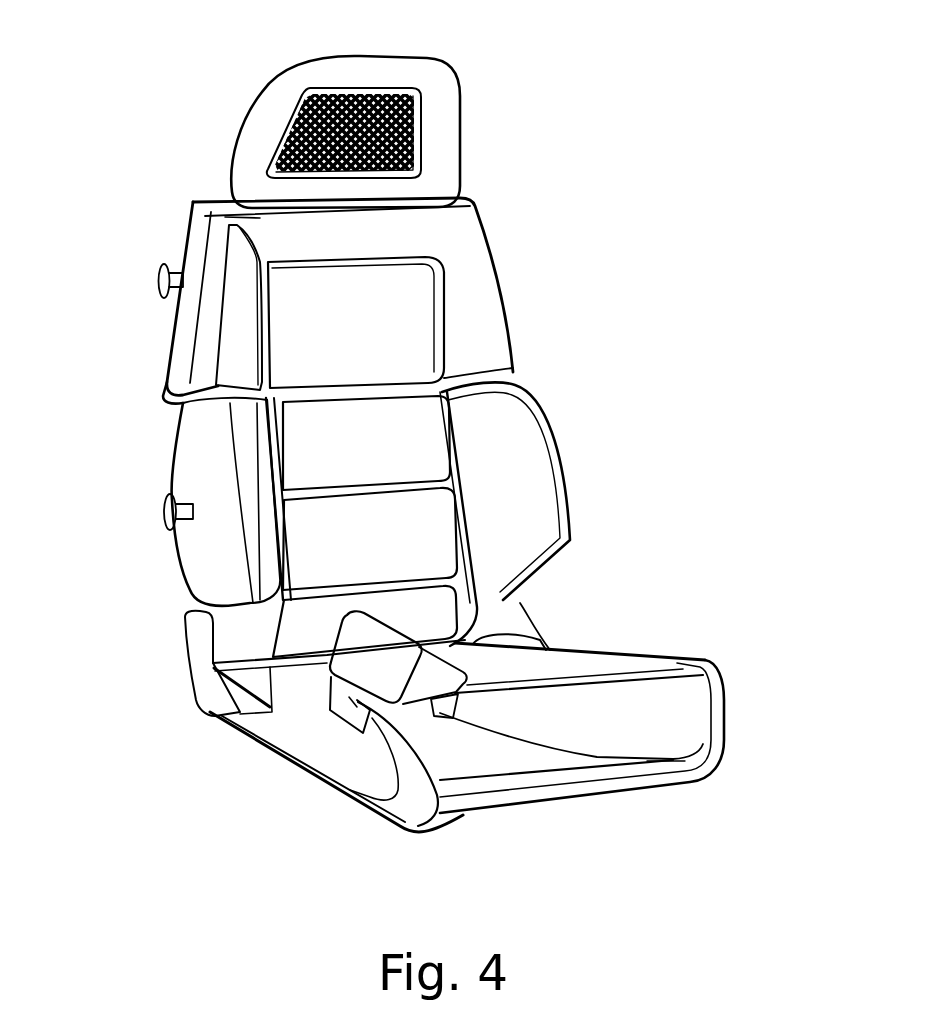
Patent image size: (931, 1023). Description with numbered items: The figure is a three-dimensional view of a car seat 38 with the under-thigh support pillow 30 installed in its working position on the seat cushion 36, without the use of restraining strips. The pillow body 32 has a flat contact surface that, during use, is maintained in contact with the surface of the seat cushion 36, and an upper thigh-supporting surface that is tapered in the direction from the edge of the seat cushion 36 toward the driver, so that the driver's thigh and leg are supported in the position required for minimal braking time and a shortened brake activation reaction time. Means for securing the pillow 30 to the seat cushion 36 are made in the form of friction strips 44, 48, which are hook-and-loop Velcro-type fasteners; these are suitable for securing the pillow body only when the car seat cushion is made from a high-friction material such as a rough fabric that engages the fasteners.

The car seat 38 is at (457, 457).
The under-thigh support pillow 30 is at (455, 659).
The pillow body 32 is at (327, 688).
The seat cushion 36 is at (570, 660).
The friction strip 44 is at (455, 720).
The friction strip 48 is at (647, 760).